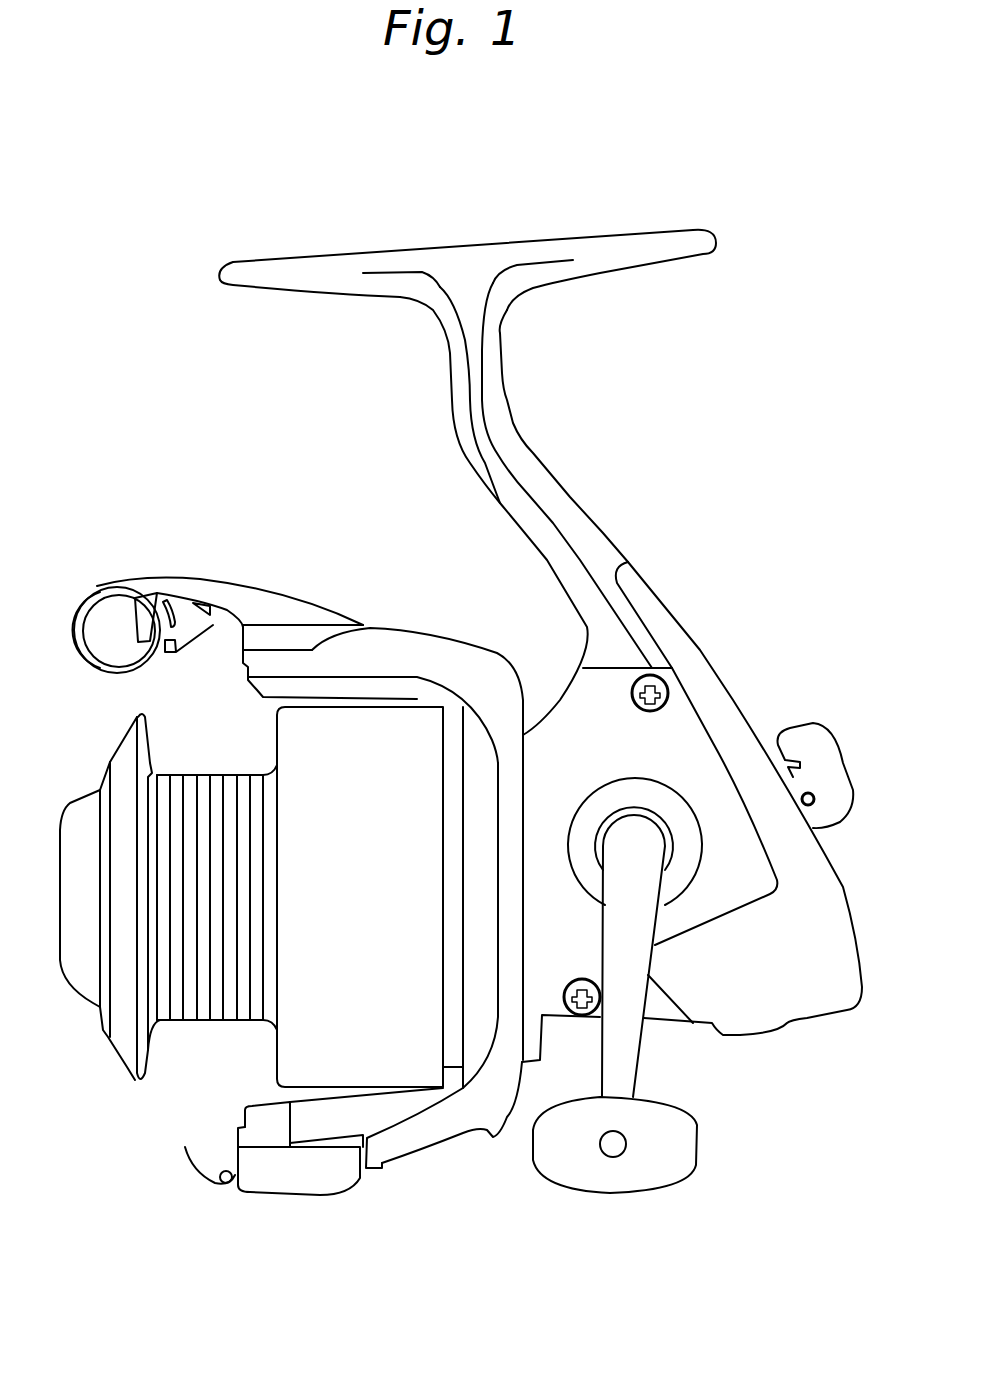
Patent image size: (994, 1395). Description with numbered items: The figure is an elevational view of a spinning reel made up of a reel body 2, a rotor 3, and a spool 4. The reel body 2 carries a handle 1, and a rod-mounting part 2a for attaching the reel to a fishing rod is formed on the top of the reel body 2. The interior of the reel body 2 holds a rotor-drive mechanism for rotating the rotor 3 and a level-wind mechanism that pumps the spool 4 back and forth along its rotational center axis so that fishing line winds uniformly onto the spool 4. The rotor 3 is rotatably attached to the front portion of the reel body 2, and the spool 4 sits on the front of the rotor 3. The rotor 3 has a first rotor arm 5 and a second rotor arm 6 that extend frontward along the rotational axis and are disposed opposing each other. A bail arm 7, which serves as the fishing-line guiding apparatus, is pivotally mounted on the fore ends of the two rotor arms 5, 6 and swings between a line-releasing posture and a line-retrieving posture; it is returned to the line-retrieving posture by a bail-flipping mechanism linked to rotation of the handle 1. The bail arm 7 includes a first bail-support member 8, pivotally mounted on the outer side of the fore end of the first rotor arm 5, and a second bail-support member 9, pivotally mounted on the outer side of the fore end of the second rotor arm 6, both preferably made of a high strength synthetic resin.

The handle 1 is at (643, 1063).
The reel body 2 is at (603, 512).
The rod-mounting part 2a is at (582, 240).
The rotor 3 is at (473, 1108).
The spool 4 is at (192, 990).
The first rotor arm 5 is at (393, 643).
The second rotor arm 6 is at (408, 1135).
The bail arm 7 is at (126, 687).
The first bail-support member 8 is at (287, 608).
The second bail-support member 9 is at (284, 1170).